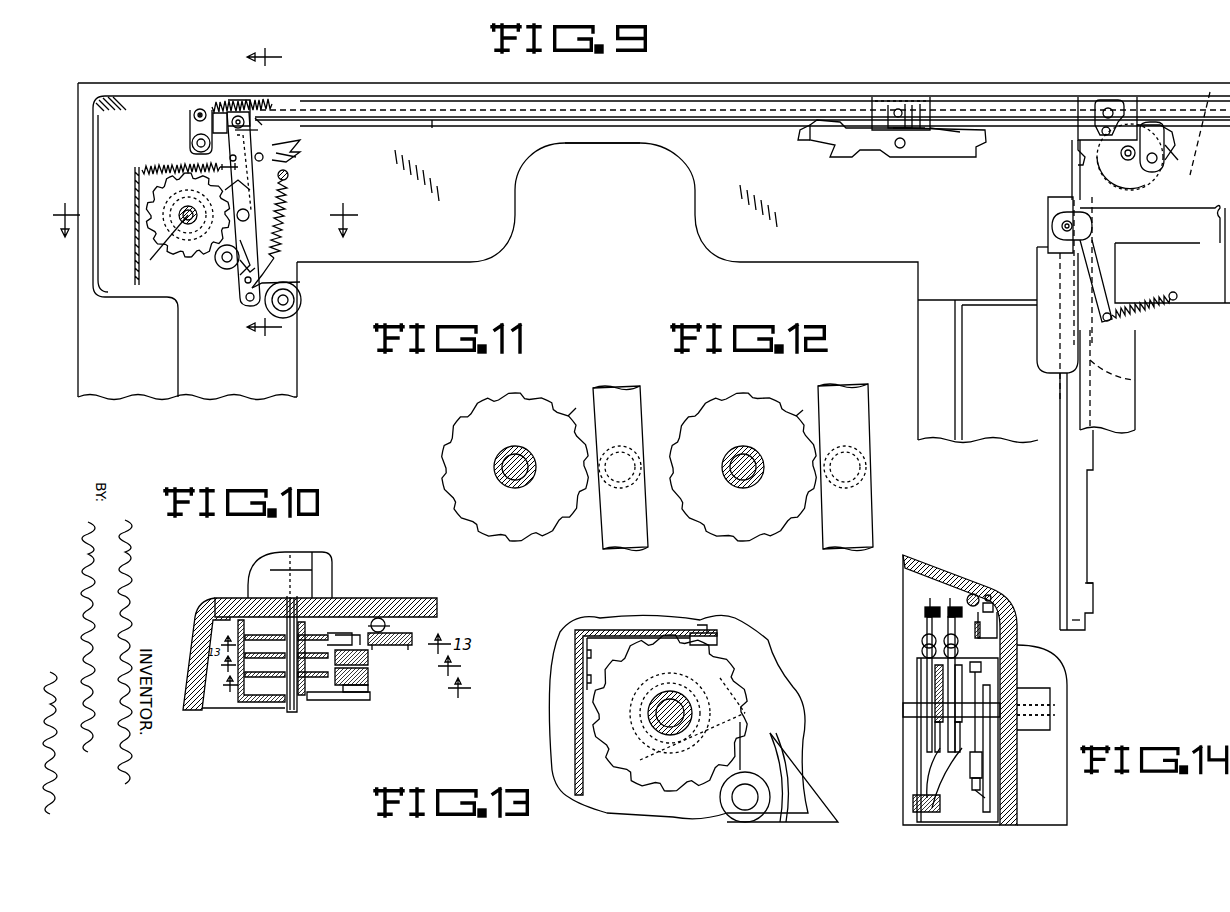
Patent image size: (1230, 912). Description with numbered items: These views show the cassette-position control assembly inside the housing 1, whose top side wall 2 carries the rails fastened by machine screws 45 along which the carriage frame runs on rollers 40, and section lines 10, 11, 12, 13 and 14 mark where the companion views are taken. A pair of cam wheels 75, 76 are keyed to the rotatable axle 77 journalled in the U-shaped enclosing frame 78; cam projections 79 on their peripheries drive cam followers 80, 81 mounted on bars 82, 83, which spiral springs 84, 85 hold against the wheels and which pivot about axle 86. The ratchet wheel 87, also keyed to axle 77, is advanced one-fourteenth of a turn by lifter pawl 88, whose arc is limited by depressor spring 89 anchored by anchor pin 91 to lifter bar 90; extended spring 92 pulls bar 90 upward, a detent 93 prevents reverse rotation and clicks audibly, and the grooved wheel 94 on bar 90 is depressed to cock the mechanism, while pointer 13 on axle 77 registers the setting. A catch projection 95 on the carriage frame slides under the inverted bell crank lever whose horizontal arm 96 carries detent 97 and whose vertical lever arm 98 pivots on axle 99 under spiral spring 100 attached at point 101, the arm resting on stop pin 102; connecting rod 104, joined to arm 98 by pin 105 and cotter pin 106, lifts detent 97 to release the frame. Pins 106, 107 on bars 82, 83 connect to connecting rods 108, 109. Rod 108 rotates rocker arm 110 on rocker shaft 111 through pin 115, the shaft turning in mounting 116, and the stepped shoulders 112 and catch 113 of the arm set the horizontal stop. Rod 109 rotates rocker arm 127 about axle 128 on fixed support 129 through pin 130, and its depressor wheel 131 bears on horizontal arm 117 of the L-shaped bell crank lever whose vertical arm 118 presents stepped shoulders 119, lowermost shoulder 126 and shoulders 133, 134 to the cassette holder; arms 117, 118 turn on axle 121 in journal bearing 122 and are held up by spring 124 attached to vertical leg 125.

In FIG. 9, the housing 1 is at (680, 138).
In FIG. 9, the top side wall 2 is at (735, 70).
In FIG. 14, the top side wall 2 is at (913, 538).
In FIG. 9, the section line 10 is at (207, 211).
In FIG. 10, the section line 11 is at (351, 687).
In FIG. 10, the section line 12 is at (345, 667).
In FIG. 10, the pointer 13 is at (258, 580).
In FIG. 14, the pointer 13 is at (1050, 678).
In FIG. 9, the section line 14 is at (264, 196).
In FIG. 9, the rollers 40 is at (1132, 178).
In FIG. 9, the machine screws 45 is at (312, 105).
In FIG. 9, the cam wheel 75 is at (178, 245).
In FIG. 11, the cam wheel 75 is at (497, 423).
In FIG. 10, the cam wheel 75 is at (272, 662).
In FIG. 13, the cam wheel 75 is at (670, 713).
In FIG. 14, the cam wheel 75 is at (935, 745).
In FIG. 12, the cam wheel 76 is at (732, 422).
In FIG. 10, the cam wheel 76 is at (280, 680).
In FIG. 14, the cam wheel 76 is at (954, 747).
In FIG. 9, the rotatable axle 77 is at (180, 218).
In FIG. 11, the rotatable axle 77 is at (508, 477).
In FIG. 12, the rotatable axle 77 is at (740, 480).
In FIG. 10, the rotatable axle 77 is at (292, 712).
In FIG. 13, the rotatable axle 77 is at (670, 725).
In FIG. 14, the rotatable axle 77 is at (903, 708).
In FIG. 9, the U-shaped enclosing frame 78 is at (135, 190).
In FIG. 10, the U-shaped enclosing frame 78 is at (260, 665).
In FIG. 14, the U-shaped enclosing frame 78 is at (918, 670).
In FIG. 9, the cam projections 79 is at (165, 250).
In FIG. 11, the cam projections 79 is at (562, 416).
In FIG. 12, the cam projections 79 is at (765, 400).
In FIG. 9, the cam follower 80 is at (243, 209).
In FIG. 11, the cam follower 80 is at (632, 445).
In FIG. 10, the cam follower 80 is at (370, 689).
In FIG. 14, the cam follower 80 is at (935, 695).
In FIG. 12, the cam follower 81 is at (866, 467).
In FIG. 10, the cam follower 81 is at (370, 656).
In FIG. 14, the cam follower 81 is at (960, 750).
In FIG. 9, the bar 82 is at (235, 182).
In FIG. 11, the bar 82 is at (620, 398).
In FIG. 10, the bar 82 is at (370, 698).
In FIG. 14, the bar 82 is at (955, 725).
In FIG. 12, the bar 83 is at (850, 392).
In FIG. 10, the bar 83 is at (370, 674).
In FIG. 14, the bar 83 is at (945, 630).
In FIG. 9, the spiral spring 84 is at (164, 168).
In FIG. 14, the spiral spring 84 is at (958, 648).
In FIG. 14, the spiral spring 85 is at (985, 662).
In FIG. 9, the axle 86 is at (248, 299).
In FIG. 14, the axle 86 is at (913, 805).
In FIG. 10, the ratchet wheel 87 is at (240, 640).
In FIG. 13, the ratchet wheel 87 is at (722, 678).
In FIG. 14, the ratchet wheel 87 is at (982, 682).
In FIG. 9, the lifter pawl 88 is at (240, 268).
In FIG. 10, the lifter pawl 88 is at (342, 638).
In FIG. 13, the lifter pawl 88 is at (747, 722).
In FIG. 14, the lifter pawl 88 is at (983, 768).
In FIG. 9, the depressor spring 89 is at (280, 258).
In FIG. 13, the depressor spring 89 is at (783, 780).
In FIG. 14, the depressor spring 89 is at (982, 785).
In FIG. 9, the lifter bar 90 is at (296, 281).
In FIG. 10, the lifter bar 90 is at (356, 632).
In FIG. 13, the lifter bar 90 is at (800, 800).
In FIG. 14, the lifter bar 90 is at (991, 745).
In FIG. 9, the anchor pin 91 is at (245, 282).
In FIG. 14, the anchor pin 91 is at (977, 798).
In FIG. 9, the extended spring 92 is at (286, 230).
In FIG. 10, the extended spring 92 is at (382, 618).
In FIG. 9, the detent 93 is at (1045, 272).
In FIG. 13, the detent 93 is at (712, 632).
In FIG. 9, the grooved wheel 94 is at (301, 300).
In FIG. 10, the grooved wheel 94 is at (413, 635).
In FIG. 9, the catch projection 95 is at (1070, 165).
In FIG. 9, the horizontal arm 96 is at (296, 157).
In FIG. 9, the detent 97 is at (288, 175).
In FIG. 9, the vertical lever arm 98 is at (194, 116).
In FIG. 9, the axle 99 is at (193, 140).
In FIG. 14, the axle 99 is at (1010, 613).
In FIG. 9, the spiral spring 100 is at (217, 103).
In FIG. 14, the spiral spring 100 is at (975, 595).
In FIG. 9, the point of attachment 101 is at (262, 105).
In FIG. 9, the stop pin 102 is at (300, 145).
In FIG. 14, the stop pin 102 is at (1008, 630).
In FIG. 9, the connecting rod 104 is at (1186, 175).
In FIG. 14, the connecting rod 104 is at (1000, 606).
In FIG. 9, the pin 105 is at (200, 110).
In FIG. 14, the pin 105 is at (991, 600).
In FIG. 9, the cotter pin 106 is at (236, 113).
In FIG. 14, the cotter pin 106 is at (952, 600).
In FIG. 14, the pin 107 is at (923, 610).
In FIG. 9, the connecting rod 108 is at (432, 128).
In FIG. 14, the connecting rod 108 is at (947, 618).
In FIG. 9, the connecting rod 109 is at (965, 135).
In FIG. 14, the connecting rod 109 is at (955, 600).
In FIG. 9, the rocker arm 110 is at (870, 153).
In FIG. 9, the rocker shaft 111 is at (900, 150).
In FIG. 9, the stepped shoulders 112 is at (822, 130).
In FIG. 9, the carriage frame catch 113 is at (1090, 162).
In FIG. 9, the pin 115 is at (899, 109).
In FIG. 9, the mounting 116 is at (925, 108).
In FIG. 9, the horizontal arm 117 is at (1200, 243).
In FIG. 9, the vertical arm 118 is at (1083, 415).
In FIG. 9, the stepped shoulders 119 is at (1088, 473).
In FIG. 9, the axle 121 is at (1060, 227).
In FIG. 9, the journal bearing 122 is at (1058, 216).
In FIG. 9, the spring 124 is at (1140, 312).
In FIG. 9, the vertical leg 125 is at (1104, 262).
In FIG. 9, the lowermost shoulder 126 is at (1083, 620).
In FIG. 9, the rocker arm 127 is at (1160, 125).
In FIG. 9, the axle 128 is at (1140, 118).
In FIG. 9, the fixed support 129 is at (1083, 100).
In FIG. 9, the pin 130 is at (1108, 108).
In FIG. 9, the depressor wheel 131 is at (1161, 167).
In FIG. 9, the shoulder 133 is at (1088, 585).
In FIG. 9, the shoulder 134 is at (1135, 380).